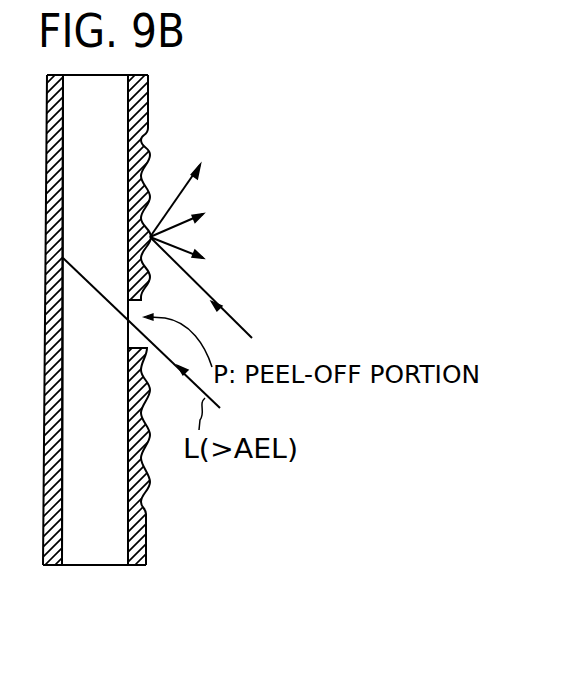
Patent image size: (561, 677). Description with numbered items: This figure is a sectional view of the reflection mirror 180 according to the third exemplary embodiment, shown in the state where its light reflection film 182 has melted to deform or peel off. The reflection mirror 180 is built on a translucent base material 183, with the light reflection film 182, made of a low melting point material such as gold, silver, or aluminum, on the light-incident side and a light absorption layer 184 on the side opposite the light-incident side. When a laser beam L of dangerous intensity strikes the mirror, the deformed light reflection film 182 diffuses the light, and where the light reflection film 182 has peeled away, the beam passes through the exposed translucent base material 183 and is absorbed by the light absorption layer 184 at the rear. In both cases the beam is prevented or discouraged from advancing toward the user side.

The reflection mirror 180 is at (141, 351).
The light reflection film 182 is at (135, 567).
The translucent base material 183 is at (102, 561).
The light absorption layer 184 is at (50, 567).